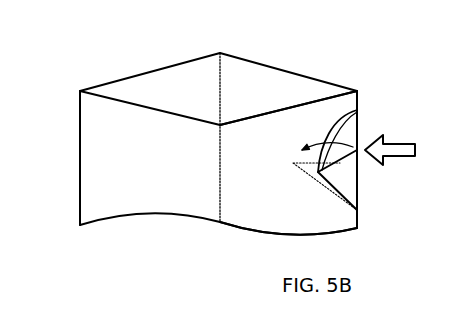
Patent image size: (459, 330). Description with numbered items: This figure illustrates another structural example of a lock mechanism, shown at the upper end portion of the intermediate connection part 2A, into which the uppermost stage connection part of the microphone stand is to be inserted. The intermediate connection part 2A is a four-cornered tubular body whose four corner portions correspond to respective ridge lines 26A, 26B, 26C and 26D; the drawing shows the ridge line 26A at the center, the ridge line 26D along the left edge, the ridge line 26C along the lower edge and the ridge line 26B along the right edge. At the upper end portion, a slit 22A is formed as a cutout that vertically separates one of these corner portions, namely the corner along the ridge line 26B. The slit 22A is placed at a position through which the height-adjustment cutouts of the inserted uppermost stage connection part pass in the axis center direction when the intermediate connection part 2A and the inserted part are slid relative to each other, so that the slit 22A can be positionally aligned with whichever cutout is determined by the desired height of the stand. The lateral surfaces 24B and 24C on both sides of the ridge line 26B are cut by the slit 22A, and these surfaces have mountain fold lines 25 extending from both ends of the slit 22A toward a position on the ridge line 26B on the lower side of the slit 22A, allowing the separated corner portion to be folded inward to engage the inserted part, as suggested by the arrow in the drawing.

The intermediate connection part 2A is at (305, 53).
The lateral surface 24B is at (320, 81).
The lateral surface 24C is at (352, 218).
The ridge line 26A is at (222, 73).
The ridge line 26B is at (358, 92).
The ridge line 26C is at (218, 207).
The ridge line 26D is at (80, 123).
The slit 22A is at (351, 135).
The mountain fold line 25 is at (338, 190).